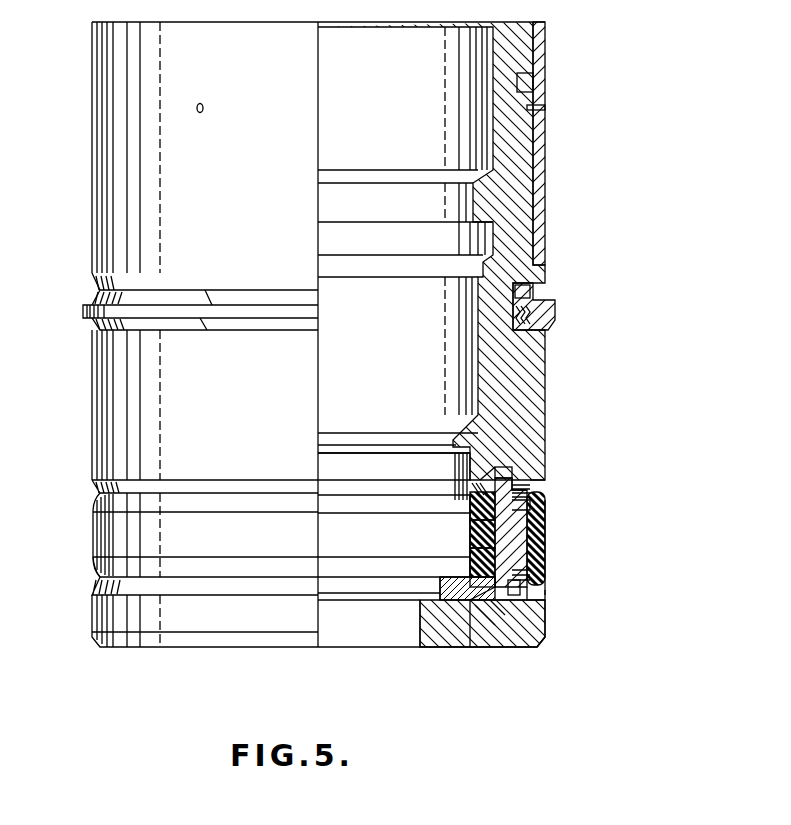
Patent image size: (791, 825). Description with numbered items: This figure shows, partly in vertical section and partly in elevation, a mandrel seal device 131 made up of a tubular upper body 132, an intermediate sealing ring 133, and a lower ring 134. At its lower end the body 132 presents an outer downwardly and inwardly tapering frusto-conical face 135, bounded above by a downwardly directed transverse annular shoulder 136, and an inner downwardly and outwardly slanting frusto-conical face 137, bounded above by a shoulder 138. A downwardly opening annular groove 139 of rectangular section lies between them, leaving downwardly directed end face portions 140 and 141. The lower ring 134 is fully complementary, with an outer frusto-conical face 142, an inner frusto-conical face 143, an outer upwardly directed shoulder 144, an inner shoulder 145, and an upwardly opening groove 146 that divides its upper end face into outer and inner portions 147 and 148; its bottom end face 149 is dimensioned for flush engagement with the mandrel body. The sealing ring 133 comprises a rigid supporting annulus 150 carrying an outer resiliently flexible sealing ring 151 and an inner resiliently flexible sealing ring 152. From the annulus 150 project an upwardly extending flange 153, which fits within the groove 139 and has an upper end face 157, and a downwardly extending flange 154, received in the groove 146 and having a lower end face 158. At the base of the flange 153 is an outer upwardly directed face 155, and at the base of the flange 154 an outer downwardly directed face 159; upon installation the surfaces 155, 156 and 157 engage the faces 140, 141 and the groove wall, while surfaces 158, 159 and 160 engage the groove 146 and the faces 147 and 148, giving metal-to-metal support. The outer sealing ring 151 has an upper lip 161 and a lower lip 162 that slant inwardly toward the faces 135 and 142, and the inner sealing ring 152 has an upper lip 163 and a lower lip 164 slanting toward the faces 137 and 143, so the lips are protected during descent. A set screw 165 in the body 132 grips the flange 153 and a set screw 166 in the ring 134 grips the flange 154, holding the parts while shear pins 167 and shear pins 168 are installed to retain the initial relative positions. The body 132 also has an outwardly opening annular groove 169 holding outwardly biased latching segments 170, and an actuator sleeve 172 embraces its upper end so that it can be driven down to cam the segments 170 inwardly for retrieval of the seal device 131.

The seal device 131 is at (268, 654).
The tubular upper body 132 is at (90, 365).
The intermediate sealing ring 133 is at (582, 526).
The lower ring 134 is at (92, 620).
The outer frusto-conical face 135 is at (100, 487).
The transverse annular shoulder 136 is at (546, 480).
The inner frusto-conical face 137 is at (373, 462).
The transverse annular shoulder 138 is at (500, 466).
The annular groove 139 is at (506, 466).
The end face portion 140 is at (534, 510).
The end face portion 141 is at (480, 495).
The outer frusto-conical face 142 is at (98, 585).
The inner frusto-conical face 143 is at (360, 597).
The upwardly directed shoulder 144 is at (548, 590).
The inner upwardly directed shoulder 145 is at (466, 583).
The annular groove 146 is at (512, 632).
The outer end face portion 147 is at (528, 560).
The inner end face portion 148 is at (484, 578).
The bottom end face 149 is at (538, 646).
The supporting annulus 150 is at (482, 546).
The outer sealing ring 151 is at (168, 549).
The inner sealing ring 152 is at (470, 534).
The upwardly extending annular flange 153 is at (468, 482).
The downwardly extending flange 154 is at (480, 623).
The outer upwardly directed annular face 155 is at (480, 506).
The surface 156 is at (482, 522).
The upper end face 157 is at (522, 488).
The lower end face 158 is at (500, 636).
The outer downwardly directed annular face 159 is at (490, 600).
The surface 160 is at (446, 574).
The upper lip 161 is at (96, 504).
The lower lip 162 is at (96, 568).
The upper lip 163 is at (336, 503).
The lower lip 164 is at (362, 553).
The set screw 165 is at (531, 496).
The set screw 166 is at (531, 575).
The shear pins 167 is at (531, 489).
The shear pins 168 is at (540, 602).
The annular groove 169 is at (514, 291).
The latching segments 170 is at (82, 312).
The actuator sleeve 172 is at (90, 152).